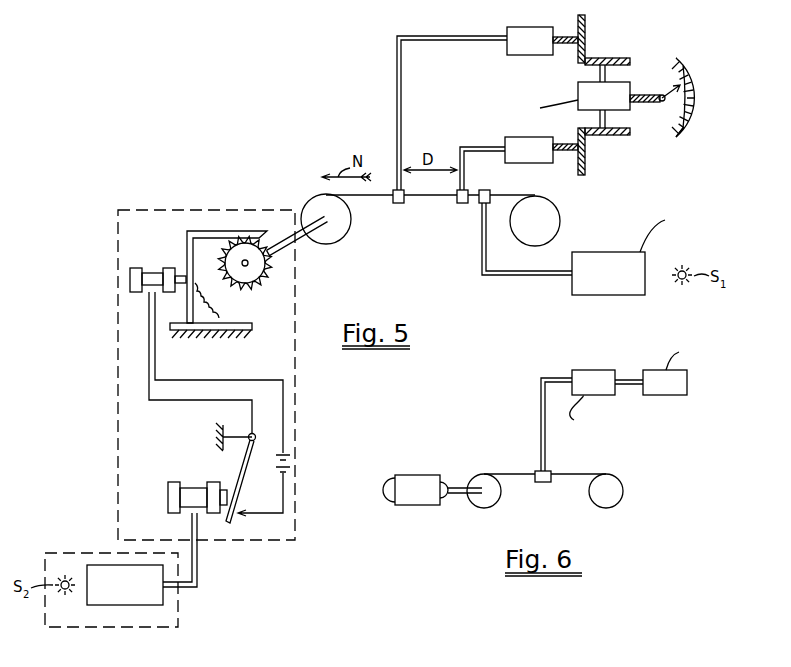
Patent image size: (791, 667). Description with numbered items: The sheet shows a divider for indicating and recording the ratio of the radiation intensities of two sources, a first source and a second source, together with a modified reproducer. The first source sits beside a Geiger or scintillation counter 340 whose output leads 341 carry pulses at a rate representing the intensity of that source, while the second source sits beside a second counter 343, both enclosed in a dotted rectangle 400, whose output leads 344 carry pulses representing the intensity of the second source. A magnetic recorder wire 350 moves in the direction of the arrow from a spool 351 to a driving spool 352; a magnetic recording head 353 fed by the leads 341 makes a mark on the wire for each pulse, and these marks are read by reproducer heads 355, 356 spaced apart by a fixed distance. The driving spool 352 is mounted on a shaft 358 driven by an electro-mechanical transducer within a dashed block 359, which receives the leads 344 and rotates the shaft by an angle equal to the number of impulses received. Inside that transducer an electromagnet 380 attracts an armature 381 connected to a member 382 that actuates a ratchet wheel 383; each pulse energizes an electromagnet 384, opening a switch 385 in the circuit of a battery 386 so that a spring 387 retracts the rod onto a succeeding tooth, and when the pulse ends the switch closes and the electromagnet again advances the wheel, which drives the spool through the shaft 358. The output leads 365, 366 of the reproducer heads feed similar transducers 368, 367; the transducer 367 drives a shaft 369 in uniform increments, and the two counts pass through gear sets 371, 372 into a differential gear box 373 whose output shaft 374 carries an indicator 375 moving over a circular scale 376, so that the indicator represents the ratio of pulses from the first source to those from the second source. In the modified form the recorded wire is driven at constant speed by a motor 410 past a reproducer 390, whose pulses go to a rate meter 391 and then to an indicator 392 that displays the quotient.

In FIG. 5, the Geiger counter or scintillation counter 340 is at (658, 253).
In FIG. 5, the output leads 341 is at (540, 276).
In FIG. 5, the Geiger counter or scintillation counter 343 is at (125, 585).
In FIG. 5, the output leads 344 is at (200, 585).
In FIG. 5, the magnetic recorder wire 350 is at (435, 198).
In FIG. 6, the magnetic recorder wire 350 is at (575, 475).
In FIG. 5, the spool 351 is at (560, 217).
In FIG. 5, the driving spool 352 is at (326, 244).
In FIG. 5, the magnetic recording head 353 is at (490, 194).
In FIG. 5, the reproducer head 355 is at (461, 205).
In FIG. 5, the reproducer head 356 is at (394, 190).
In FIG. 5, the shaft 358 is at (292, 240).
In FIG. 5, the electro-mechanical transducer 359 is at (178, 210).
In FIG. 5, the output leads 365 is at (460, 146).
In FIG. 5, the output leads 366 is at (397, 63).
In FIG. 5, the electromechanical transducer 367 is at (530, 41).
In FIG. 5, the electromechanical transducer 368 is at (529, 150).
In FIG. 5, the shaft 369 is at (566, 44).
In FIG. 5, the gear set 371 is at (590, 45).
In FIG. 5, the gear set 372 is at (605, 136).
In FIG. 5, the differential gear box 373 is at (548, 96).
In FIG. 5, the output shaft 374 is at (636, 92).
In FIG. 5, the indicator 375 is at (680, 132).
In FIG. 5, the circular scale 376 is at (696, 98).
In FIG. 5, the electromagnet 380 is at (140, 280).
In FIG. 5, the armature 381 is at (182, 276).
In FIG. 5, the member 382 is at (222, 231).
In FIG. 5, the ratchet wheel 383 is at (268, 275).
In FIG. 5, the electromagnet 384 is at (190, 490).
In FIG. 5, the switch 385 is at (240, 467).
In FIG. 5, the battery 386 is at (290, 462).
In FIG. 5, the spring 387 is at (222, 318).
In FIG. 6, the reproducer 390 is at (552, 470).
In FIG. 6, the rate meter 391 is at (618, 399).
In FIG. 6, the indicator 392 is at (687, 368).
In FIG. 5, the dotted rectangle 400 is at (90, 553).
In FIG. 6, the motor 410 is at (432, 490).